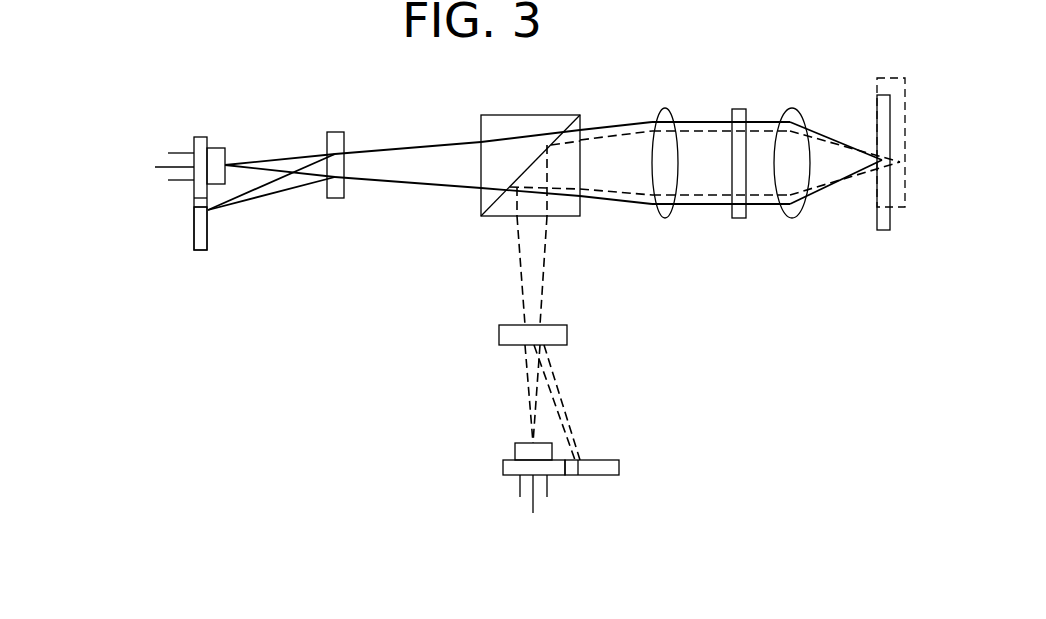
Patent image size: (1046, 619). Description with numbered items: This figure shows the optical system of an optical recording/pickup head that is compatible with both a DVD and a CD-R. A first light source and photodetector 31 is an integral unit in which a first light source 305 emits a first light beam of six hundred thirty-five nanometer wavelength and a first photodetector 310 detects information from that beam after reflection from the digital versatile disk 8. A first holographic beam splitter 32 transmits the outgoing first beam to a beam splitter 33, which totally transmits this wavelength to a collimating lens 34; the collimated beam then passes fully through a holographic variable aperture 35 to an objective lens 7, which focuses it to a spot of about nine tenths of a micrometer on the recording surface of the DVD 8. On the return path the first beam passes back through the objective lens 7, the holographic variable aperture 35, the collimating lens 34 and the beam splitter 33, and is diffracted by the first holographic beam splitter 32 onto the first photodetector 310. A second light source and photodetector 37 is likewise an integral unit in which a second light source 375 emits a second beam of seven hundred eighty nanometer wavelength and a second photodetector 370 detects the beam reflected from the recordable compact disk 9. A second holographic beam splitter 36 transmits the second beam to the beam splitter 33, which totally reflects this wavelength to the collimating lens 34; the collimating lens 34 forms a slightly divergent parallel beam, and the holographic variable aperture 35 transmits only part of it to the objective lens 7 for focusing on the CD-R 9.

The first light source and photodetector 31 is at (136, 188).
The first light source 305 is at (218, 148).
The first photodetector 310 is at (200, 208).
The first holographic beam splitter 32 is at (334, 132).
The beam splitter 33 is at (531, 115).
The collimating lens 34 is at (673, 103).
The holographic variable aperture 35 is at (738, 218).
The objective lens 7 is at (793, 110).
The digital versatile disk 8 is at (886, 230).
The recordable compact disk 9 is at (905, 110).
The second holographic beam splitter 36 is at (499, 333).
The second light source and photodetector 37 is at (551, 516).
The second photodetector 370 is at (578, 475).
The second light source 375 is at (521, 490).